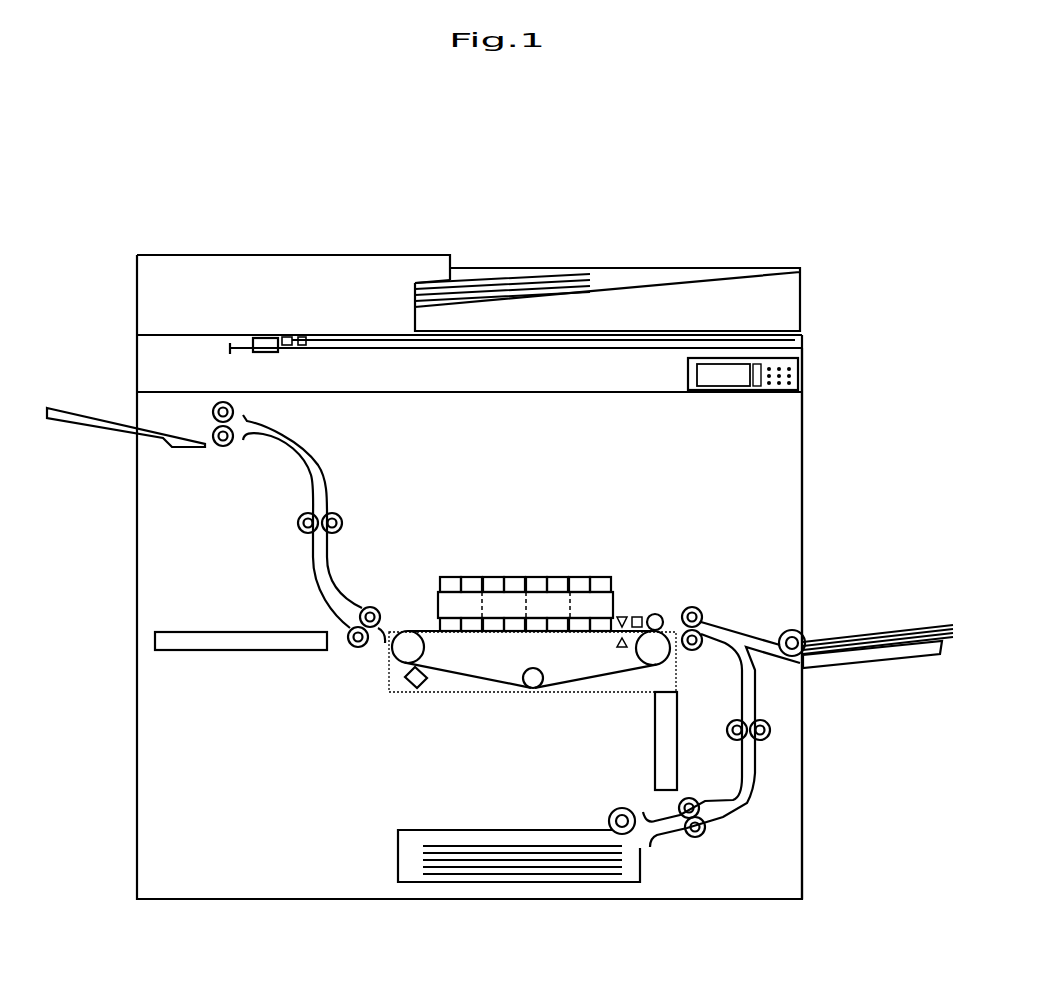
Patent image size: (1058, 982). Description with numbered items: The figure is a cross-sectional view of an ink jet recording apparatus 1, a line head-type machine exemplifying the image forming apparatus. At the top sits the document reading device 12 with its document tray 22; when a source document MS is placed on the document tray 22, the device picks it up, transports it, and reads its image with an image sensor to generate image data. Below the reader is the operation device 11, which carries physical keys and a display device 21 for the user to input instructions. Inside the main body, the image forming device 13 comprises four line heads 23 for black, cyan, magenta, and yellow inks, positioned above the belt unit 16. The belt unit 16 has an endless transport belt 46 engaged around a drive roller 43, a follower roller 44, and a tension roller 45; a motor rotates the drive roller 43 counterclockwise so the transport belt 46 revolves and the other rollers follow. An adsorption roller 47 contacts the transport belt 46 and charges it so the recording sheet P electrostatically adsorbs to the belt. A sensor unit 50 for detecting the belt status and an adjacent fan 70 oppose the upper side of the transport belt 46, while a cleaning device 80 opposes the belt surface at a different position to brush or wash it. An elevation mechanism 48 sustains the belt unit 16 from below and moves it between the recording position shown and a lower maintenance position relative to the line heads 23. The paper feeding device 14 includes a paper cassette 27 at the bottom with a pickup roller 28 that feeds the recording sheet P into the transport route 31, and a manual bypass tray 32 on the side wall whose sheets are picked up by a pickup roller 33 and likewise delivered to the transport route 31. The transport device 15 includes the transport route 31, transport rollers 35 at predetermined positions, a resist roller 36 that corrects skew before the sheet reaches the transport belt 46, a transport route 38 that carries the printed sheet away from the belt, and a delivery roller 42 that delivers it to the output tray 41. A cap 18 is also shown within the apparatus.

The ink jet recording apparatus 1 is at (475, 180).
The operation device 11 is at (806, 377).
The document reading device 12 is at (812, 297).
The image forming device 13 is at (430, 601).
The paper feeding device 14 is at (372, 834).
The transport device 15 is at (786, 778).
The belt unit 16 is at (421, 690).
The cap 18 is at (237, 651).
The display device 21 is at (715, 368).
The document tray 22 is at (610, 288).
The line heads 23 is at (467, 577).
The paper cassette 27 is at (483, 882).
The pickup roller 28 is at (608, 817).
The transport route 31 is at (763, 655).
The manual bypass tray 32 is at (893, 660).
The pickup roller 33 is at (805, 637).
The transport rollers 35 is at (350, 632).
The resist roller 36 is at (696, 651).
The transport route 38 is at (312, 478).
The output tray 41 is at (77, 413).
The delivery roller 42 is at (212, 404).
The drive roller 43 is at (395, 660).
The follower roller 44 is at (647, 665).
The tension roller 45 is at (530, 688).
The transport belt 46 is at (478, 681).
The adsorption roller 47 is at (660, 612).
The elevation mechanism 48 is at (654, 739).
The sensor unit 50 is at (622, 614).
The fan 70 is at (637, 616).
The cleaning device 80 is at (408, 690).
The source document MS is at (517, 280).
The recording sheet P is at (912, 630).